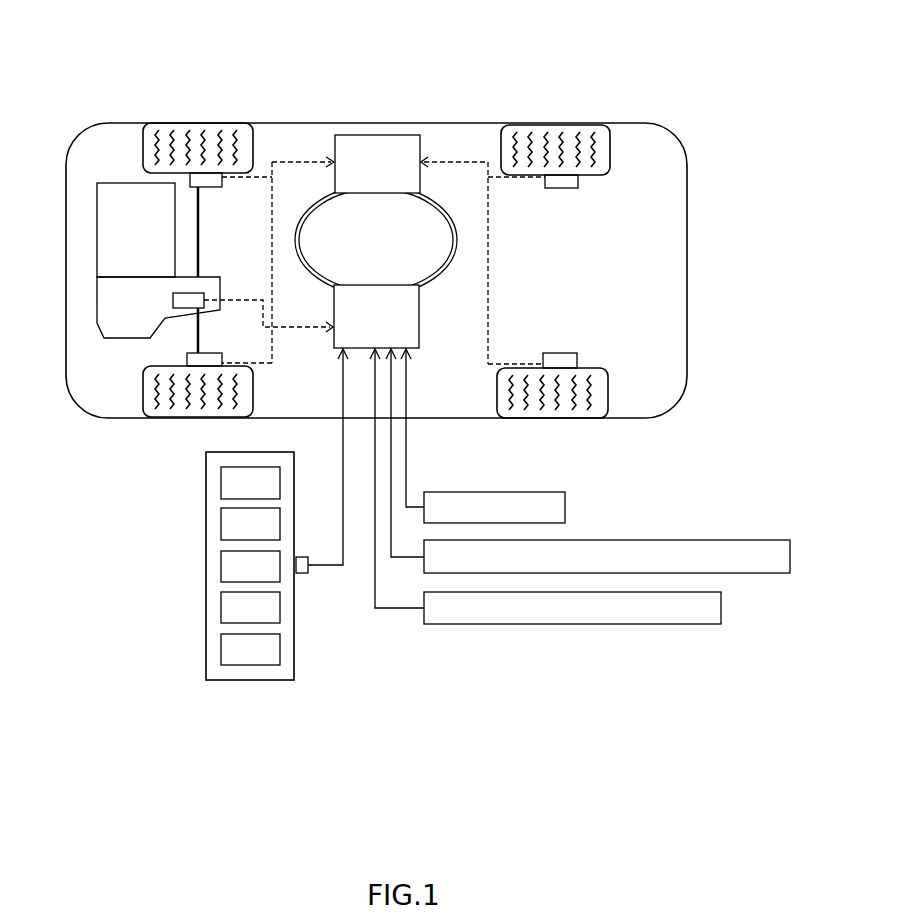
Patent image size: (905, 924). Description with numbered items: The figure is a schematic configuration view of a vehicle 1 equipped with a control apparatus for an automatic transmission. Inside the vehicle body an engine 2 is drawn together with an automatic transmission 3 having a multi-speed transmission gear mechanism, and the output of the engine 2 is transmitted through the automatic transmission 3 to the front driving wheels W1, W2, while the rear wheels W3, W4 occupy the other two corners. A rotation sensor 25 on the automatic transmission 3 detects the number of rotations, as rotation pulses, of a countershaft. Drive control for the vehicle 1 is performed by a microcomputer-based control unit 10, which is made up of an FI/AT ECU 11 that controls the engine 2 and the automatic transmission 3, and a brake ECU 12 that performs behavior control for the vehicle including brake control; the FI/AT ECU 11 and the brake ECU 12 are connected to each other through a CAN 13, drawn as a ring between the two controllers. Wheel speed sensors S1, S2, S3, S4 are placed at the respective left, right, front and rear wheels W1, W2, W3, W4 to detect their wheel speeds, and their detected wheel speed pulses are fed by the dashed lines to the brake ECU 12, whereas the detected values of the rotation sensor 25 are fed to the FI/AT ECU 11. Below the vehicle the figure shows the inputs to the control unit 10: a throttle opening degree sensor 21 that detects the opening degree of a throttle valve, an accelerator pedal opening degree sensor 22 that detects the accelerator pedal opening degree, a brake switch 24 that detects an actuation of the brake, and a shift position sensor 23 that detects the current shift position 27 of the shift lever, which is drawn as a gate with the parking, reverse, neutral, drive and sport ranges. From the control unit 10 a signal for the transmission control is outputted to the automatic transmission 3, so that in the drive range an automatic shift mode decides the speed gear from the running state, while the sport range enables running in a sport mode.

The vehicle 1 is at (674, 98).
The control unit 10 is at (442, 143).
The FI/AT ECU 11 is at (412, 332).
The brake ECU 12 is at (398, 140).
The CAN 13 is at (441, 222).
The engine 2 is at (112, 231).
The automatic transmission 3 is at (108, 297).
The rotation sensor 25 is at (173, 301).
The driving wheel W1 is at (162, 403).
The driving wheel W2 is at (199, 133).
The rear wheel W3 is at (555, 410).
The rear wheel W4 is at (553, 135).
The wheel speed sensor S1 is at (210, 358).
The wheel speed sensor S2 is at (206, 185).
The wheel speed sensor S3 is at (560, 357).
The wheel speed sensor S4 is at (560, 190).
The throttle opening degree sensor 21 is at (721, 607).
The accelerator pedal opening degree sensor 22 is at (790, 557).
The shift position sensor 23 is at (305, 575).
The brake switch 24 is at (565, 505).
The shift position 27 is at (239, 685).